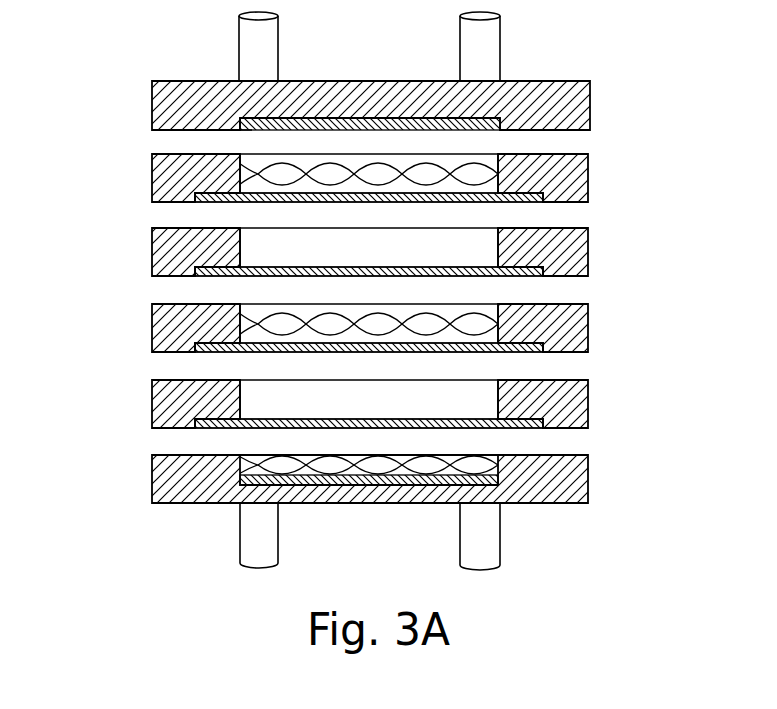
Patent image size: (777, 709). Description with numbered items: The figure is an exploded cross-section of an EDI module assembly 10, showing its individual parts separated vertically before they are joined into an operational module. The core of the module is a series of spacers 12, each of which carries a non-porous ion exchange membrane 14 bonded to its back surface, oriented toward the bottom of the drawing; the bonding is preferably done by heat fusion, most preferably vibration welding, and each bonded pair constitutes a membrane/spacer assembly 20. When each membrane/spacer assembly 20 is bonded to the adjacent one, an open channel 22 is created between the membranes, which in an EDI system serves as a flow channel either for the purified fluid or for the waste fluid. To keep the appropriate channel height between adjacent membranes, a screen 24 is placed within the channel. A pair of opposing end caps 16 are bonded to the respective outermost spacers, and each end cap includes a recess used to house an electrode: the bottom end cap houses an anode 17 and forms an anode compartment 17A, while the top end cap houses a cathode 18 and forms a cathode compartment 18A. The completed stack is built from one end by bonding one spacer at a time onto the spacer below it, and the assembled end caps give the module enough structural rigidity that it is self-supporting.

The EDI module assembly 10 is at (600, 62).
The spacer 12 is at (590, 182).
The ion exchange membrane 14 is at (212, 203).
The end cap 16 is at (190, 81).
The anode 17 is at (250, 480).
The anode compartment 17A is at (475, 478).
The cathode 18 is at (430, 120).
The cathode compartment 18A is at (245, 129).
The membrane/spacer assembly 20 is at (360, 308).
The open channel 22 is at (473, 243).
The screen 24 is at (462, 173).